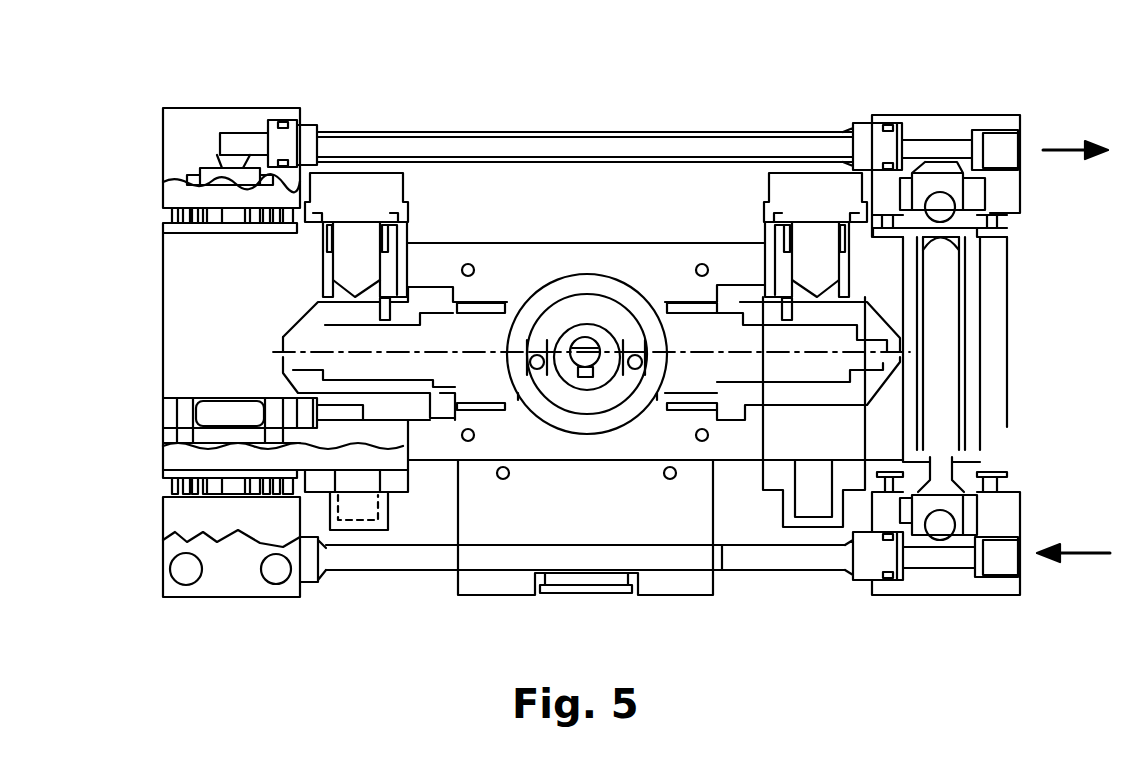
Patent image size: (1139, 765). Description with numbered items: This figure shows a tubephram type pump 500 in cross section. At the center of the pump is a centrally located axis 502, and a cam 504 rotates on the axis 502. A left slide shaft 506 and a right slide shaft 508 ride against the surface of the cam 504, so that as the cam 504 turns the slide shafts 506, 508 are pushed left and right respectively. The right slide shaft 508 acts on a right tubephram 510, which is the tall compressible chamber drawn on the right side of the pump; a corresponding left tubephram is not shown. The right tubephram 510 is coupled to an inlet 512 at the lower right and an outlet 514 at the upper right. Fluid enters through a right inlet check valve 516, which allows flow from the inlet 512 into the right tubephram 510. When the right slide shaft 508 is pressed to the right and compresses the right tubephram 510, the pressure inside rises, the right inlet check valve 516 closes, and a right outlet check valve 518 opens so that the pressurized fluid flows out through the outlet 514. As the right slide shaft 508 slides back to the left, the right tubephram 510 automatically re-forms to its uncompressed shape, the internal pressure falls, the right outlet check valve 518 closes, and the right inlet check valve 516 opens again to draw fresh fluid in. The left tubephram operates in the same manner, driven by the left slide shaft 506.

The tubephram type pump 500 is at (591, 352).
The axis 502 is at (590, 348).
The cam 504 is at (547, 290).
The left slide shaft 506 is at (518, 400).
The right slide shaft 508 is at (657, 400).
The right tubephram 510 is at (953, 342).
The inlet 512 is at (1042, 550).
The outlet 514 is at (1028, 139).
The right inlet check valve 516 is at (955, 520).
The right outlet check valve 518 is at (955, 212).